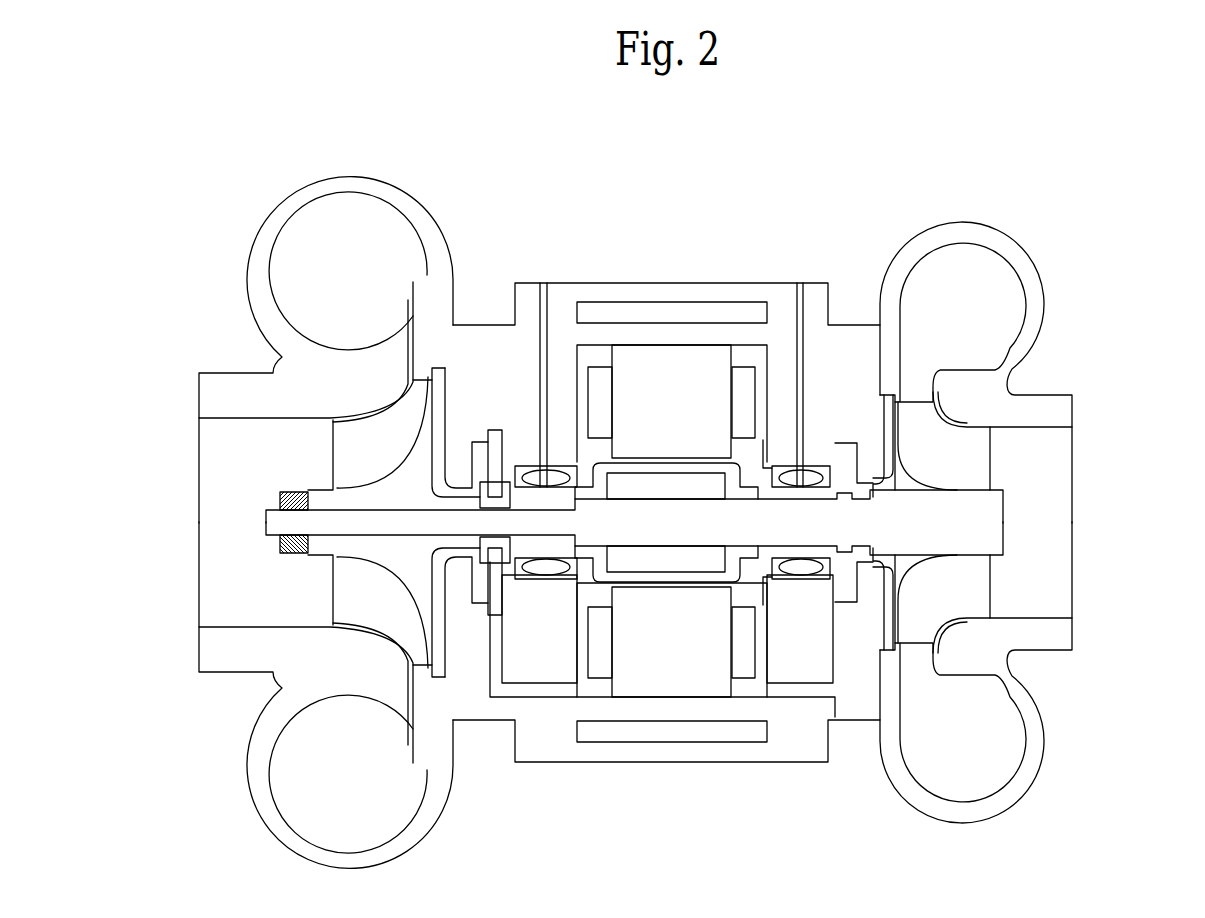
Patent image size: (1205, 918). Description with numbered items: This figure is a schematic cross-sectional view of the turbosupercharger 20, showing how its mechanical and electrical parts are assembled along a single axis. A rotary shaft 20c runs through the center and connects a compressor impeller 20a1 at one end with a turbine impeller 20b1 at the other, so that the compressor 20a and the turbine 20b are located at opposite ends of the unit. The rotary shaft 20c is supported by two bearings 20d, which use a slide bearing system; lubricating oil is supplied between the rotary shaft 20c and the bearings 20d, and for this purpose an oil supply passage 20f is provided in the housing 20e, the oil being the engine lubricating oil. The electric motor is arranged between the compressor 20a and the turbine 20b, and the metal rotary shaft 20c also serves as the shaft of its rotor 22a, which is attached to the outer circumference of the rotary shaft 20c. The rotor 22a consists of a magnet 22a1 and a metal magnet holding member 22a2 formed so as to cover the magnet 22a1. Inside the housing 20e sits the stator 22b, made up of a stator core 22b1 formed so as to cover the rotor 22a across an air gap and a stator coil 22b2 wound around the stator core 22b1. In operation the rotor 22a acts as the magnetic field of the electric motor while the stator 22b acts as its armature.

The turbosupercharger 20 is at (882, 198).
The compressor 20a is at (232, 262).
The compressor impeller 20a1 is at (345, 448).
The turbine 20b is at (1055, 300).
The turbine impeller 20b1 is at (978, 460).
The rotary shaft 20c is at (702, 540).
The bearings 20d is at (555, 570).
The housing 20e is at (607, 290).
The oil supply passage 20f is at (543, 283).
The rotor 22a is at (703, 847).
The magnet 22a1 is at (688, 562).
The magnet holding member 22a2 is at (636, 572).
The stator 22b is at (717, 340).
The stator core 22b1 is at (682, 363).
The stator coil 22b2 is at (600, 382).